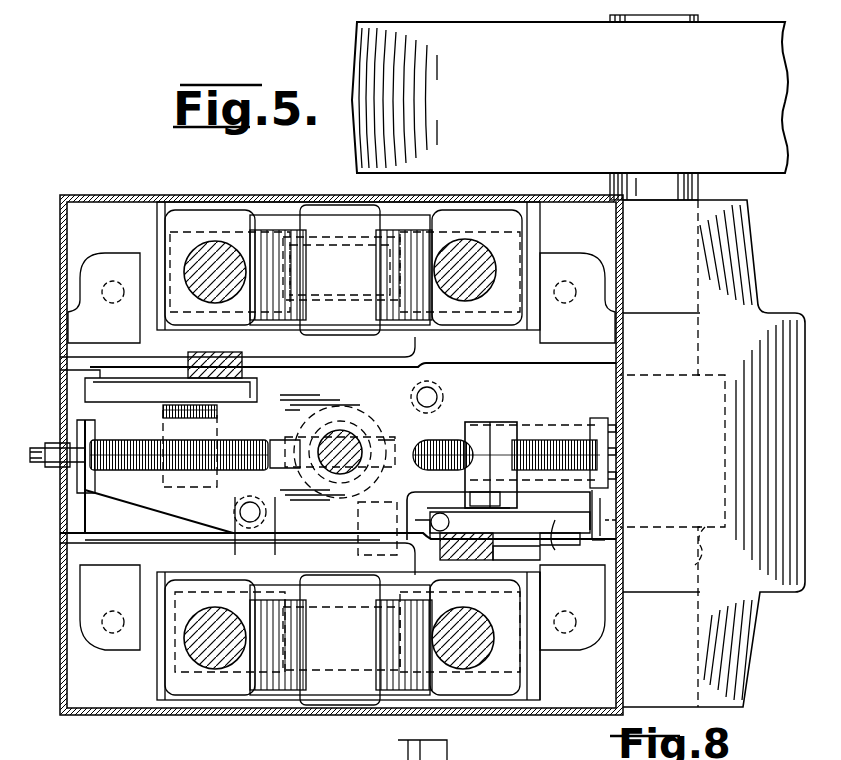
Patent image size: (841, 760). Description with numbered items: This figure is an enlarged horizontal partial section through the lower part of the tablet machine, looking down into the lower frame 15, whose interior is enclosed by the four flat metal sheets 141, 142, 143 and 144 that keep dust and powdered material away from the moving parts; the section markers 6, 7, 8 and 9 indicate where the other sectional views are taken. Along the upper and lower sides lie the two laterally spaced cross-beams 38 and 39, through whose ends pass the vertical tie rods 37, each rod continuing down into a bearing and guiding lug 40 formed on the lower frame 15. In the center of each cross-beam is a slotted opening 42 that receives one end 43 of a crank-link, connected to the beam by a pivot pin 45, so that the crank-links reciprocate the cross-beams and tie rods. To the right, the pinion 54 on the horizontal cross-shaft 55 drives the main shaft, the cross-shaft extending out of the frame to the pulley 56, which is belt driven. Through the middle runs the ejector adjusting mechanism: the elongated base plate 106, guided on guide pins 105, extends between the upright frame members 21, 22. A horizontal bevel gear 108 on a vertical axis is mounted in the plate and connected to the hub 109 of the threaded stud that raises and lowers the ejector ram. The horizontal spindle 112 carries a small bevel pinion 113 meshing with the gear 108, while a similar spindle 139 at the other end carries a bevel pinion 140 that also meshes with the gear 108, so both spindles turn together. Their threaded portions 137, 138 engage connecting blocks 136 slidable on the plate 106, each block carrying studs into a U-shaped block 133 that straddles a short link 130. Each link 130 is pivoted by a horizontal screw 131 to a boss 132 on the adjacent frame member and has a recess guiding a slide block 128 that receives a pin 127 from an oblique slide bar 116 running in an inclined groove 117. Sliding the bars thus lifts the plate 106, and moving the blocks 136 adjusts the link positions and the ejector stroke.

The lower frame 15 is at (738, 270).
The upright frame member 21 is at (158, 330).
The upright frame member 22 is at (165, 580).
The vertical tie rod 37 is at (495, 262).
The cross-beam 38 is at (228, 222).
The cross-beam 39 is at (172, 712).
The bearing and guiding lug 40 is at (502, 233).
The slotted opening 42 is at (296, 235).
The end of crank-link 43 is at (345, 245).
The pivot pin 45 is at (306, 272).
The pinion 54 is at (716, 553).
The horizontal cross-shaft 55 is at (688, 190).
The pulley 56 is at (366, 137).
The guide pin 105 is at (437, 398).
The base plate 106 is at (310, 530).
The horizontal bevel gear 108 is at (380, 430).
The hub 109 is at (352, 435).
The horizontal spindle 112 is at (142, 472).
The bevel pinion 113 is at (316, 524).
The slide bar 116 is at (188, 358).
The inclined groove 117 is at (500, 550).
The pin 127 is at (470, 555).
The slide block 128 is at (440, 500).
The short link 130 is at (118, 378).
The horizontal screw 131 is at (610, 522).
The boss 132 is at (100, 371).
The U-shaped block 133 is at (165, 416).
The connecting block 136 is at (500, 432).
The threaded portion 137 is at (160, 472).
The threaded portion 138 is at (555, 440).
The spindle 139 is at (568, 440).
The bevel pinion 140 is at (372, 478).
The flat metal sheet 141 is at (60, 645).
The flat metal sheet 142 is at (206, 202).
The flat metal sheet 143 is at (520, 710).
The flat metal sheet 144 is at (625, 502).
The section line 6- 6 is at (60, 455).
The section line 7- 7 is at (62, 195).
The section line 8- 8 is at (60, 412).
The section line 9- 9 is at (490, 367).